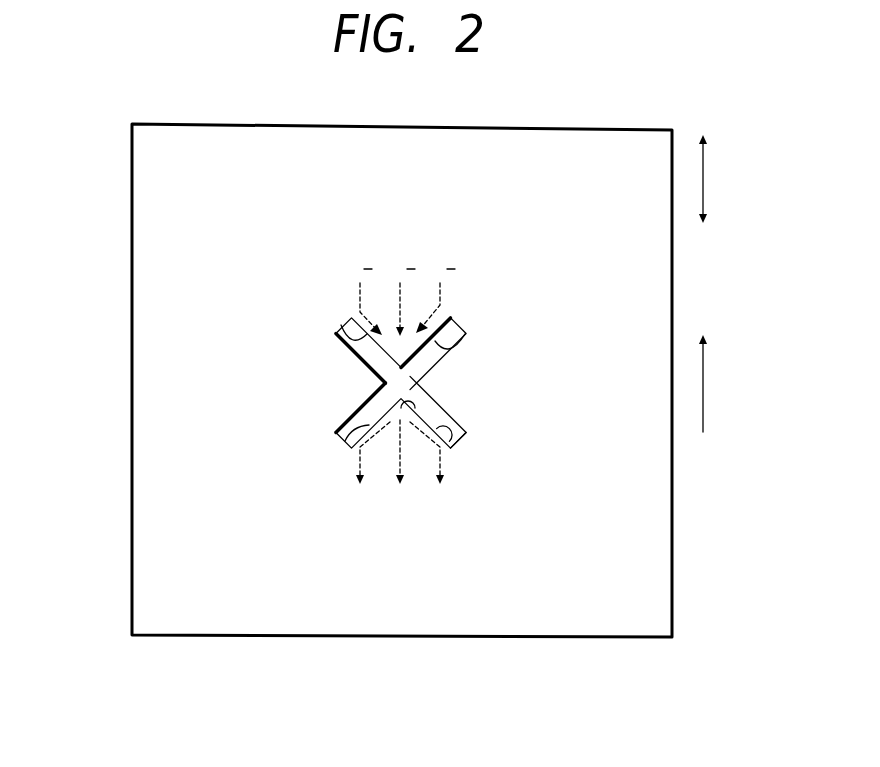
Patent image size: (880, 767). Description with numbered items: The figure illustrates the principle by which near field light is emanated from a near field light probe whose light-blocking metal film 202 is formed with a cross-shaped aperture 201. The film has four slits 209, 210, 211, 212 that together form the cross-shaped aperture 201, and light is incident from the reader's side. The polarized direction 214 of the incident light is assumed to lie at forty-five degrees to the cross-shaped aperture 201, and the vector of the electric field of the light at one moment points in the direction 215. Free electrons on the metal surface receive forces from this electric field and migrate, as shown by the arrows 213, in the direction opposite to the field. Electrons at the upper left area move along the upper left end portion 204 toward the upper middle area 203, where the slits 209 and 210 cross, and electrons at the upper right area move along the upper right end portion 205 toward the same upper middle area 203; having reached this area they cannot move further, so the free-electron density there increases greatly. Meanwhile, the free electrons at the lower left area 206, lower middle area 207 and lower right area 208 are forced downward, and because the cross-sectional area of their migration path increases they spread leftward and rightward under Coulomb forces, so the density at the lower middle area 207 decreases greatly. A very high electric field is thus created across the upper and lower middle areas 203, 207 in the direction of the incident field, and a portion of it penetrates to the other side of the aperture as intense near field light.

The cross-shaped aperture 201 is at (385, 383).
The light-blocking metal film 202 is at (176, 306).
The upper middle area 203 is at (418, 383).
The upper left end portion 204 is at (341, 325).
The upper right end portion 205 is at (450, 349).
The lower left area 206 is at (345, 441).
The lower middle area 207 is at (408, 414).
The lower right area 208 is at (453, 443).
The slit A 209 is at (340, 351).
The slit B 210 is at (465, 334).
The slit C 211 is at (343, 420).
The slit D 212 is at (463, 446).
The arrows representing movement of electrons 213 is at (440, 294).
The orientation of polarization of incident light 214 is at (703, 180).
The orientation of electric field vector of light 215 is at (703, 402).